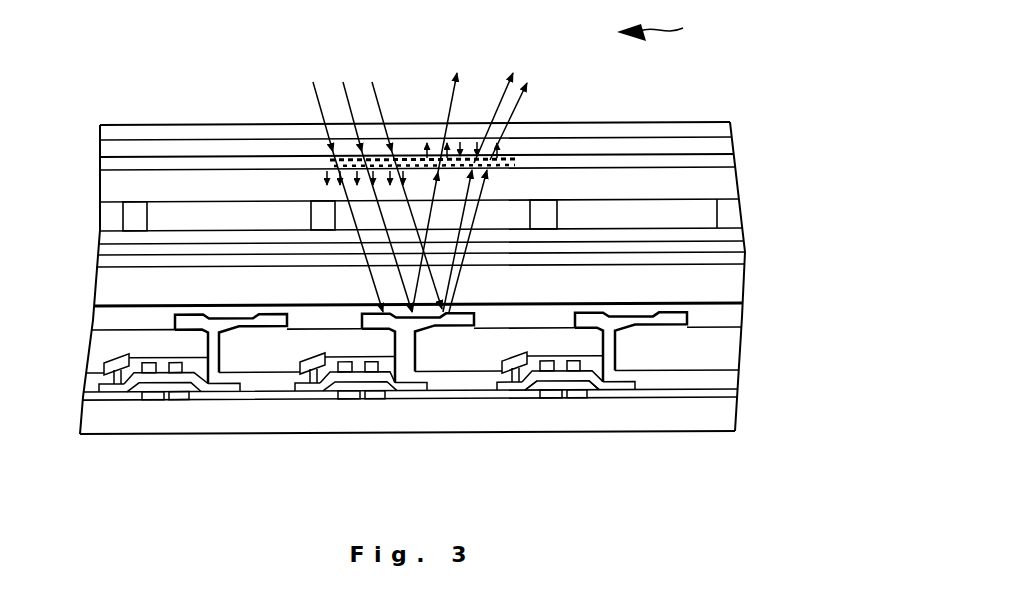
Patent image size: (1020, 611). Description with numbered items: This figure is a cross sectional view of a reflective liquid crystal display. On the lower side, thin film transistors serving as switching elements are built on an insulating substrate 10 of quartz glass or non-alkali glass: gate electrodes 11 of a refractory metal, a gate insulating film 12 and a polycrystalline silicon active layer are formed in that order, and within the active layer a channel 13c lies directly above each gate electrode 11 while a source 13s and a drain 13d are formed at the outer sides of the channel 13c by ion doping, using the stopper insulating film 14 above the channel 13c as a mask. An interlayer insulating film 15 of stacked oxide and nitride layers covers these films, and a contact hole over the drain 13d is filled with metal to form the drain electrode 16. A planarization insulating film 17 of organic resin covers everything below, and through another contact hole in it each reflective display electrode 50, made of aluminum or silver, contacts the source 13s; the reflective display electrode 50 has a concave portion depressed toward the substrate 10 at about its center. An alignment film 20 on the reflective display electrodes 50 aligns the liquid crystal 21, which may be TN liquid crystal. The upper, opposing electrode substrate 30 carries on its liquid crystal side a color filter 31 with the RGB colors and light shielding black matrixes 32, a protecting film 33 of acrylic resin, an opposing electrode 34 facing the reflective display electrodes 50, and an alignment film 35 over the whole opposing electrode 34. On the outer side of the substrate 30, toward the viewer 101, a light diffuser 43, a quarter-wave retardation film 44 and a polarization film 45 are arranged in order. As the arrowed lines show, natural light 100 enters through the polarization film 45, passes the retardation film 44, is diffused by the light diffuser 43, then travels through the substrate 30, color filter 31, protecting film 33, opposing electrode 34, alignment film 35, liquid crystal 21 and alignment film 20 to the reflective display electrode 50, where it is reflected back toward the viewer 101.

The insulating substrate 10 is at (715, 417).
The gate electrode 11 is at (552, 400).
The gate insulating film 12 is at (100, 397).
The channel 13c is at (535, 390).
The drain 13d is at (513, 386).
The source 13s is at (620, 389).
The stopper insulating film 14 is at (542, 361).
The interlayer insulating film 15 is at (715, 382).
The drain electrode 16 is at (503, 352).
The planarization insulating film 17 is at (110, 350).
The alignment film 20 is at (110, 323).
The liquid crystal 21 is at (742, 288).
The opposing electrode substrate 30 is at (712, 183).
The color filter 31 is at (110, 222).
The black matrix 32 is at (132, 228).
The protecting film 33 is at (732, 232).
The opposing electrode 34 is at (105, 257).
The alignment film 35 is at (737, 257).
The light diffuser 43 is at (722, 158).
The retardation film 44 is at (110, 155).
The polarization film 45 is at (722, 127).
The reflective display electrode 50 is at (687, 313).
The natural light 100 is at (313, 108).
The viewer 101 is at (671, 27).